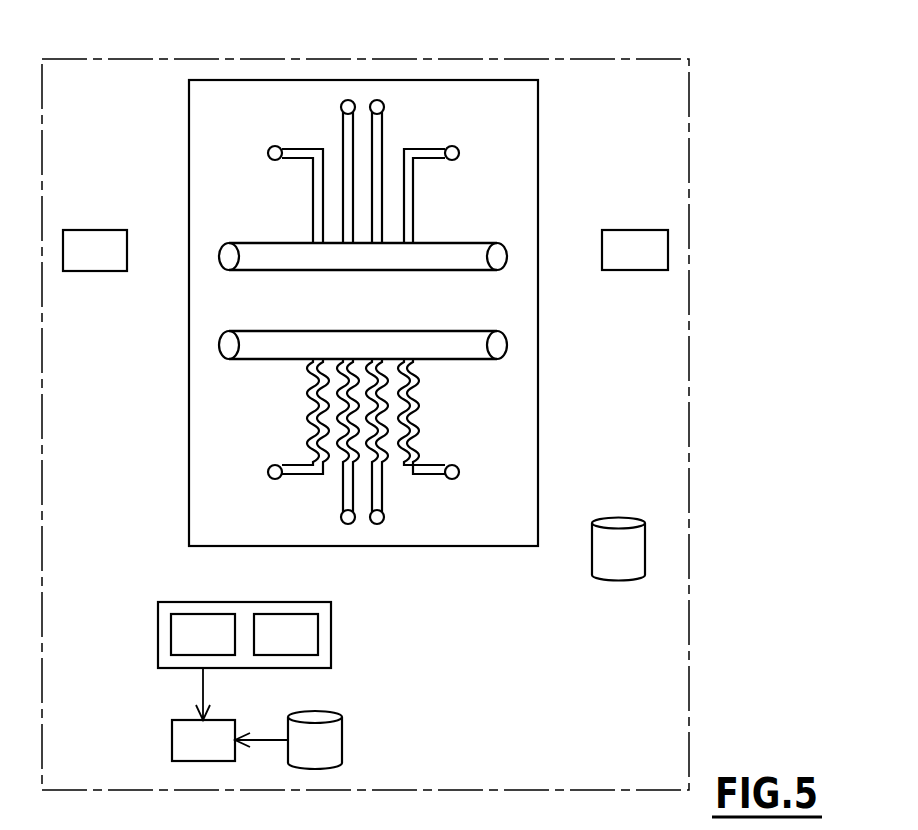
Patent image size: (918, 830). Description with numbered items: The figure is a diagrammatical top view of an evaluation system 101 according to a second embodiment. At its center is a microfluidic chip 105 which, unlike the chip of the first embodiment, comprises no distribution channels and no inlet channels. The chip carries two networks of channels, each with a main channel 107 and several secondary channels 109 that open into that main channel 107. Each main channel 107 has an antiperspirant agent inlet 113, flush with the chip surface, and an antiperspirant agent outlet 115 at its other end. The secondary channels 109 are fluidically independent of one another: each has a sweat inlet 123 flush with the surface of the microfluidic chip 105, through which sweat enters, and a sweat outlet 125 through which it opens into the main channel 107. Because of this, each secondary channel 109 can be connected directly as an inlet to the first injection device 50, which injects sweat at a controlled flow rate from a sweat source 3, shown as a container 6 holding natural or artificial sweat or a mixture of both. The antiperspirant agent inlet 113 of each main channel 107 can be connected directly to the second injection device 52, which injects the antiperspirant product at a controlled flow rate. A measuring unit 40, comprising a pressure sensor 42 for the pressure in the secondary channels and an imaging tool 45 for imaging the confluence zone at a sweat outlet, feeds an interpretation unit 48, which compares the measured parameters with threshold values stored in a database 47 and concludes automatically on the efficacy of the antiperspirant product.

The evaluation system 101 is at (147, 59).
The microfluidic chip 105 is at (189, 95).
The main channel 107 is at (420, 258).
The secondary channel 109 is at (345, 140).
The antiperspirant agent inlet 113 is at (227, 252).
The antiperspirant agent outlet 115 is at (500, 256).
The sweat inlet 123 is at (348, 100).
The sweat outlet 125 is at (320, 243).
The second injection device 52 is at (95, 250).
The first injection device 50 is at (635, 250).
The sweat source 3 is at (618, 549).
The container 6 is at (663, 538).
The measuring unit 40 is at (219, 633).
The pressure sensor 42 is at (203, 634).
The imaging tool 45 is at (286, 634).
The interpretation unit 48 is at (203, 740).
The database 47 is at (315, 740).